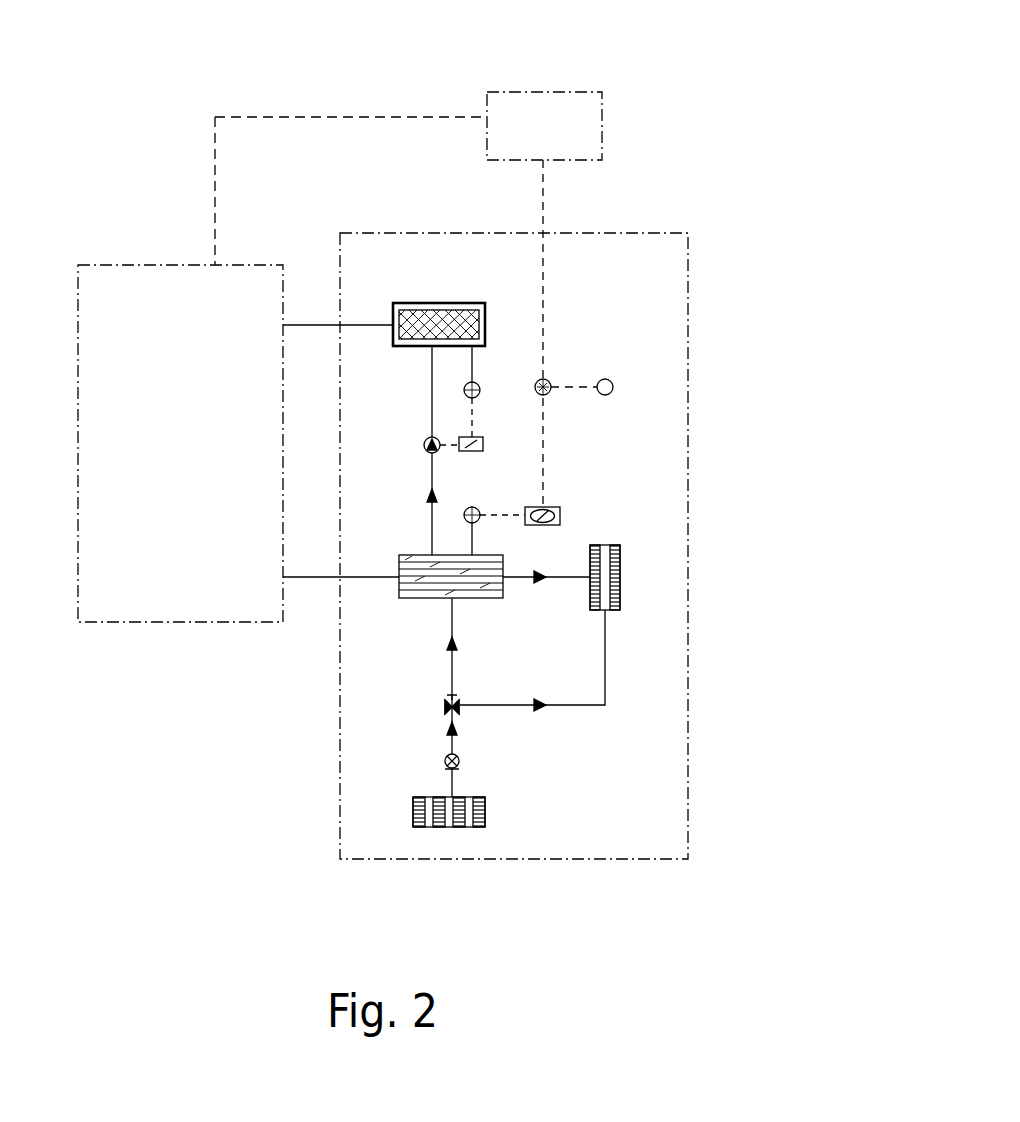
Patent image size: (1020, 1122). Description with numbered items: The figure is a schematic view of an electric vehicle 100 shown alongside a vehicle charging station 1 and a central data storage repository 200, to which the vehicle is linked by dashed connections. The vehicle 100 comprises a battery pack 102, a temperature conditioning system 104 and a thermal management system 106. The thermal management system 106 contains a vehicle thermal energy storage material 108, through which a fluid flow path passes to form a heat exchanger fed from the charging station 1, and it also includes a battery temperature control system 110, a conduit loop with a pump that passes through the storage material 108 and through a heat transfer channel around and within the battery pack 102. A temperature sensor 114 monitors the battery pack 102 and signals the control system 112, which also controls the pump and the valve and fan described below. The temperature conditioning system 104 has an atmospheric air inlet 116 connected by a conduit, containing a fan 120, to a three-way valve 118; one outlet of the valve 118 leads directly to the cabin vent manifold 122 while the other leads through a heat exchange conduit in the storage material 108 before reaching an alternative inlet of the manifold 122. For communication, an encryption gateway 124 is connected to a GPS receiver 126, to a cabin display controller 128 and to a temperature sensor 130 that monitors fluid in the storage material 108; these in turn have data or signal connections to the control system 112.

The vehicle charging station 1 is at (100, 287).
The vehicle 100 is at (693, 677).
The central data storage repository 200 is at (592, 115).
The battery pack 102 is at (433, 320).
The battery temperature control system 110 is at (392, 305).
The temperature sensor 114 is at (473, 381).
The encryption gateway 124 is at (543, 379).
The GPS receiver 126 is at (605, 379).
The control system 112 is at (478, 437).
The temperature sensor 130 is at (473, 507).
The cabin display controller 128 is at (559, 507).
The thermal management system 106 is at (409, 536).
The vehicle thermal energy storage material 108 is at (428, 582).
The temperature conditioning system 104 is at (436, 677).
The three-way valve 118 is at (445, 708).
The fan 120 is at (460, 760).
The atmospheric air inlet 116 is at (443, 810).
The cabin vent manifold 122 is at (601, 573).